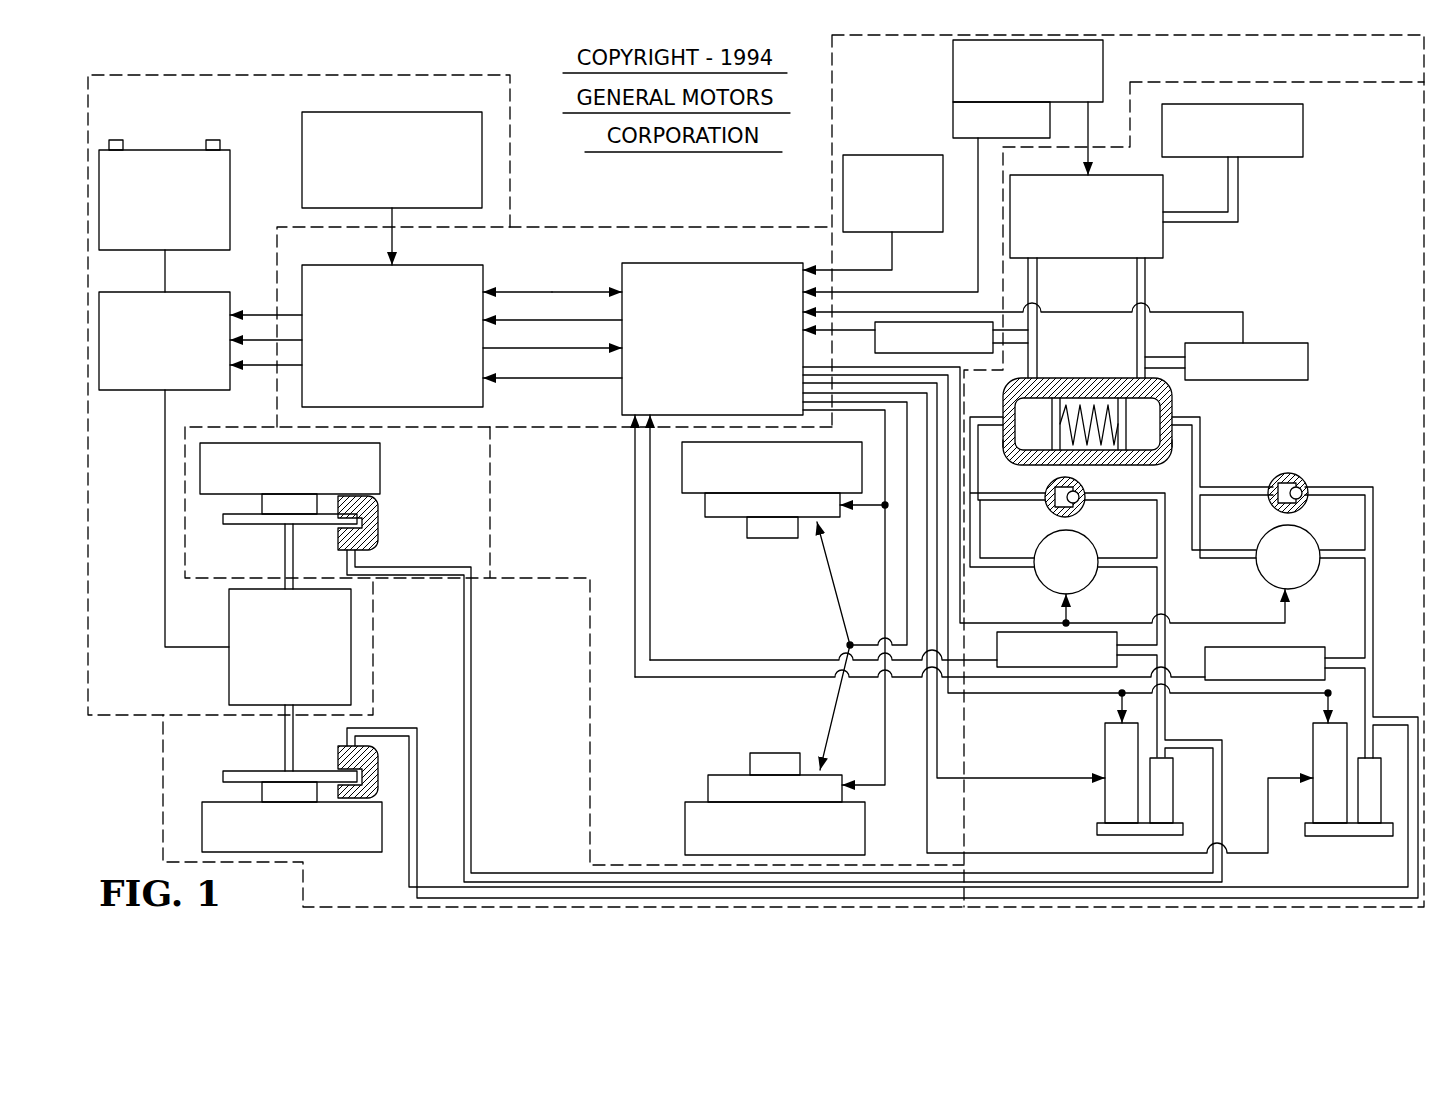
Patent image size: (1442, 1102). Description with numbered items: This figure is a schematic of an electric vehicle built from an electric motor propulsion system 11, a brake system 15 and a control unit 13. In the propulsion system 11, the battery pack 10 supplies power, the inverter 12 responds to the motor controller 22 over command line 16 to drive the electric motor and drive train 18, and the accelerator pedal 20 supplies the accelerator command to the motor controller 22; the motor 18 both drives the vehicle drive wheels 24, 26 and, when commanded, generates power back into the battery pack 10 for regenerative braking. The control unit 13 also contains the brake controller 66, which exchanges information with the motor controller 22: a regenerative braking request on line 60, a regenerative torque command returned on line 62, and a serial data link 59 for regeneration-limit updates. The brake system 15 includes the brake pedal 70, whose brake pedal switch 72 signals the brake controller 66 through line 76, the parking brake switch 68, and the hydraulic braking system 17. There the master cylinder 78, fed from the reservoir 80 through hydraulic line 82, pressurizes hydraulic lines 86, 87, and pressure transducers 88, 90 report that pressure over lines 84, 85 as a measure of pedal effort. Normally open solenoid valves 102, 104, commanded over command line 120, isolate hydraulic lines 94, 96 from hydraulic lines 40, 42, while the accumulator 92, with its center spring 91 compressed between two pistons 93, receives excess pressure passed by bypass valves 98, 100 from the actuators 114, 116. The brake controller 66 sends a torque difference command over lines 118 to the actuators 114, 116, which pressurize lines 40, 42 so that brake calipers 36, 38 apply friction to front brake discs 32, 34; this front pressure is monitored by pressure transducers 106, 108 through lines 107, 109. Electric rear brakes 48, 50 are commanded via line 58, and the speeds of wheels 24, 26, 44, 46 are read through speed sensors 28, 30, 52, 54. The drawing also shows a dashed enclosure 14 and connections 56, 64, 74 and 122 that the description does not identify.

The battery pack 10 is at (157, 156).
The electric motor propulsion system 11 is at (510, 110).
The inverter 12 is at (137, 377).
The control unit 13 is at (680, 223).
The wheel brake section 14 is at (165, 562).
The brake system 15 is at (830, 118).
The command line 16 is at (262, 305).
The hydraulic braking system 17 is at (1262, 80).
The electric motor and drive train 18 is at (240, 663).
The accelerator pedal 20 is at (312, 124).
The motor controller 22 is at (435, 275).
The vehicle drive wheel 24 is at (360, 463).
The vehicle drive wheel 26 is at (325, 840).
The speed sensor 28 is at (270, 503).
The speed sensor 30 is at (272, 795).
The brake disc 32 is at (272, 522).
The brake disc 34 is at (250, 775).
The brake caliper 36 is at (375, 515).
The brake caliper 38 is at (365, 775).
The hydraulic line 40 is at (473, 668).
The hydraulic line 42 is at (392, 728).
The vehicle wheel 44 is at (700, 462).
The vehicle wheel 46 is at (695, 827).
The electric rear brake 48 is at (730, 507).
The electric rear brake 50 is at (735, 787).
The speed sensor 52 is at (772, 530).
The speed sensor 54 is at (778, 758).
The position feedback line 56 is at (900, 647).
The line 58 is at (887, 747).
The serial data link 59 is at (567, 292).
The line 60 is at (598, 320).
The line 62 is at (548, 350).
The signal line 64 is at (542, 380).
The brake controller 66 is at (667, 275).
The parking brake switch 68 is at (908, 158).
The brake pedal 70 is at (968, 88).
The brake pedal switch 72 is at (955, 125).
The park brake switch line 74 is at (853, 270).
The line 76 is at (940, 290).
The master cylinder 78 is at (1160, 238).
The reservoir 80 is at (1295, 148).
The hydraulic line 82 is at (1240, 195).
The line 84 is at (850, 333).
The line 85 is at (910, 307).
The hydraulic line 86 is at (1038, 273).
The hydraulic line 87 is at (1148, 278).
The pressure transducer 88 is at (990, 354).
The pressure transducer 90 is at (1300, 352).
The center spring 91 is at (1068, 412).
The accumulator 92 is at (1118, 385).
The pistons 93 is at (1027, 447).
The hydraulic line 94 is at (977, 545).
The hydraulic line 96 is at (1197, 438).
The bypass valve 98 is at (1052, 515).
The bypass valve 100 is at (1285, 473).
The solenoid valve 102 is at (1075, 540).
The solenoid valve 104 is at (1313, 537).
The pressure transducer 106 is at (1023, 667).
The line 107 is at (652, 615).
The pressure transducer 108 is at (1272, 681).
The line 109 is at (637, 580).
The actuator 114 is at (1130, 826).
The actuator 116 is at (1330, 838).
The lines 118 is at (962, 788).
The command line 120 is at (1253, 620).
The wheel cylinder control line 122 is at (1057, 697).